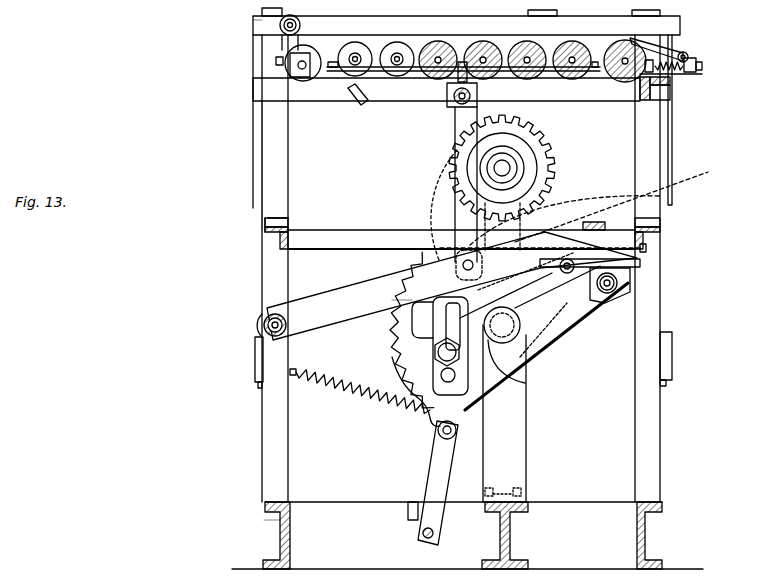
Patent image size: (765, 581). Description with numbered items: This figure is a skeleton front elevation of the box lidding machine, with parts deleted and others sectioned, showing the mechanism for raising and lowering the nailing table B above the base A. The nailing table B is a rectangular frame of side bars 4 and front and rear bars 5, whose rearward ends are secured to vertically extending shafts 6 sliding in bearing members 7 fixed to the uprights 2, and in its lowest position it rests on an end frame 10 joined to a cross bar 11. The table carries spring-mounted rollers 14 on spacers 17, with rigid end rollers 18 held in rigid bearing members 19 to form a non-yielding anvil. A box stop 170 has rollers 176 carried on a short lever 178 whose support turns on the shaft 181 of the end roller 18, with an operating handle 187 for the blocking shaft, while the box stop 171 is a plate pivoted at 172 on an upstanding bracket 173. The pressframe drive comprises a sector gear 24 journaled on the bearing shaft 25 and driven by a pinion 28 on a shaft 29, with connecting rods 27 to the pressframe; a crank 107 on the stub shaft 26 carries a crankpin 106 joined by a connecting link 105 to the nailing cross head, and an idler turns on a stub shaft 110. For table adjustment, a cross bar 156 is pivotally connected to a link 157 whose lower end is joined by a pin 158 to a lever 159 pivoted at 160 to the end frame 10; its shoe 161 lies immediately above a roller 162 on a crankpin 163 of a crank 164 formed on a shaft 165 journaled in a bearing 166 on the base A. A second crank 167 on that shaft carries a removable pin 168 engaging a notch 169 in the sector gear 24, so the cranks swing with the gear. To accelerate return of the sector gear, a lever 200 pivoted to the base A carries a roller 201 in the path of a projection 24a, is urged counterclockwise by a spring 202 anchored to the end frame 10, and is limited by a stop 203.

The nailing table B is at (256, 27).
The base A is at (278, 521).
The upright 2 is at (655, 424).
The side bar 4 is at (676, 94).
The front and rear bar 5 is at (318, 100).
The vertically extending shaft 6 is at (262, 238).
The bearing member 7 is at (256, 355).
The end frame 10 is at (272, 413).
The cross bar 11 is at (650, 233).
The roller 14 is at (540, 47).
The spacer 17 is at (378, 50).
The roller 18 is at (287, 72).
The rigid bearing member 19 is at (306, 58).
The sector gear 24 is at (392, 346).
The projection 24a is at (440, 428).
The bearing shaft 25 is at (520, 352).
The stub shaft 26 is at (470, 407).
The connecting rod 27 is at (390, 326).
The pinion 28 is at (548, 156).
The shaft 29 is at (506, 168).
The connecting link 105 is at (452, 312).
The crankpin 106 is at (456, 378).
The crank 107 is at (432, 367).
The stub shaft 110 is at (478, 296).
The cross bar 156 is at (462, 60).
The link 157 is at (456, 128).
The pin 158 is at (448, 238).
The lever 159 is at (342, 297).
The pivot 160 is at (268, 306).
The shoe 161 is at (646, 262).
The roller 162 is at (612, 292).
The crankpin 163 is at (640, 280).
The crank 164 is at (548, 302).
The shaft 165 is at (490, 350).
The bearing 166 is at (530, 326).
The second crank 167 is at (590, 298).
The removable pin 168 is at (627, 203).
The notch 169 is at (565, 216).
The box stop 170 is at (270, 33).
The box stop 171 is at (676, 49).
The pivot 172 is at (690, 62).
The upstanding bracket 173 is at (678, 87).
The roller 176 is at (306, 26).
The short lever 178 is at (283, 55).
The shaft 181 is at (300, 70).
The operating handle 187 is at (365, 100).
The lever 200 is at (436, 478).
The roller 201 is at (458, 438).
The spring 202 is at (340, 400).
The stop 203 is at (408, 512).